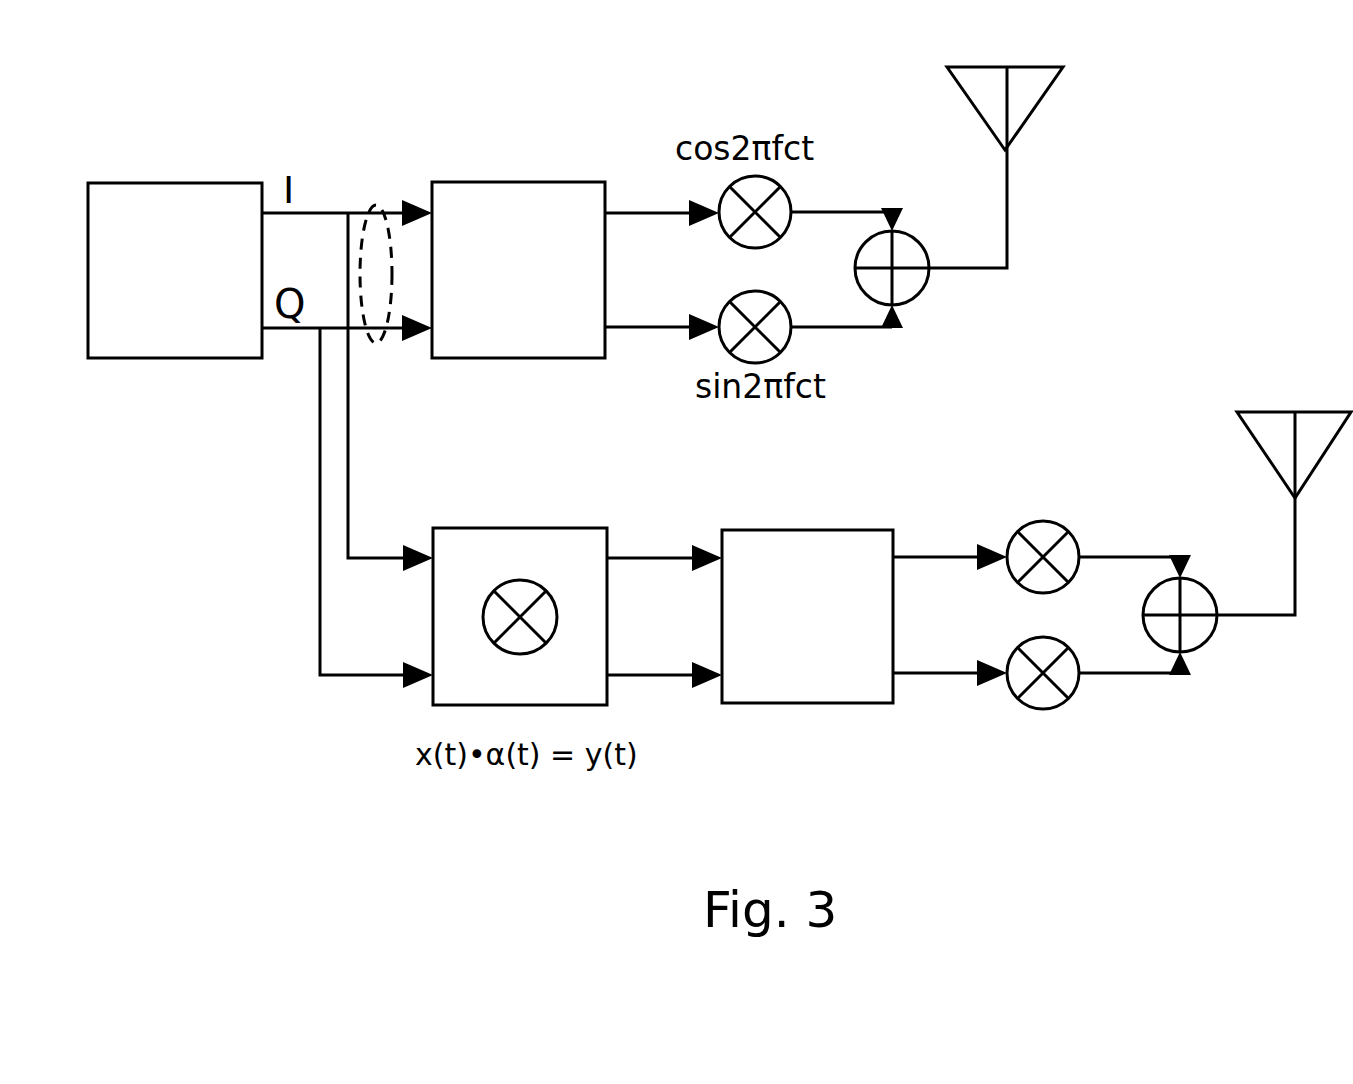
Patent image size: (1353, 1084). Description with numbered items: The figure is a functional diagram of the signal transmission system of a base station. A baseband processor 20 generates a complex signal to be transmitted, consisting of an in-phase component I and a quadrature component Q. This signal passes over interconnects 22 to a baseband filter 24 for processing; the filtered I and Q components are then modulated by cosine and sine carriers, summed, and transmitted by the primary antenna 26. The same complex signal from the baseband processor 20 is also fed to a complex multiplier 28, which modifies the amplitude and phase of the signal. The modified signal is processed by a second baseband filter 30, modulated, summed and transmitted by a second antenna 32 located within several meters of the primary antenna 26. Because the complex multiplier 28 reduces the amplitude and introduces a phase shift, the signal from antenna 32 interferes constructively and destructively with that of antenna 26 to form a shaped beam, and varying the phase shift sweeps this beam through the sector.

The baseband processor 20 is at (175, 183).
The interconnects 22 is at (376, 205).
The baseband filter 24 is at (520, 182).
The primary antenna 26 is at (1040, 95).
The complex multiplier 28 is at (535, 528).
The baseband filter 30 is at (806, 703).
The antenna 32 is at (1258, 440).